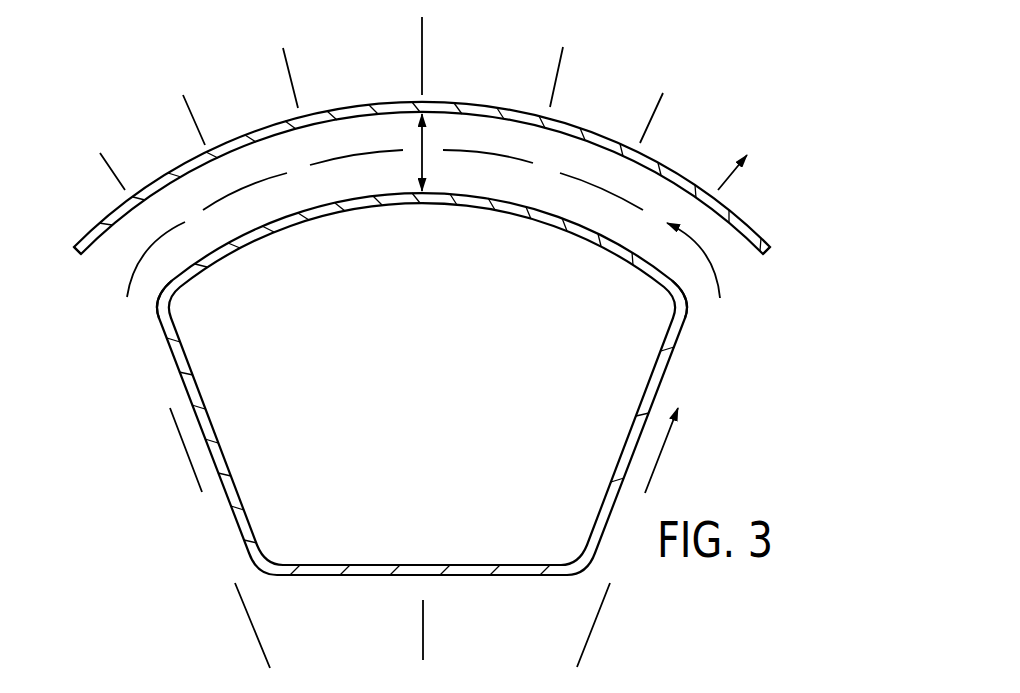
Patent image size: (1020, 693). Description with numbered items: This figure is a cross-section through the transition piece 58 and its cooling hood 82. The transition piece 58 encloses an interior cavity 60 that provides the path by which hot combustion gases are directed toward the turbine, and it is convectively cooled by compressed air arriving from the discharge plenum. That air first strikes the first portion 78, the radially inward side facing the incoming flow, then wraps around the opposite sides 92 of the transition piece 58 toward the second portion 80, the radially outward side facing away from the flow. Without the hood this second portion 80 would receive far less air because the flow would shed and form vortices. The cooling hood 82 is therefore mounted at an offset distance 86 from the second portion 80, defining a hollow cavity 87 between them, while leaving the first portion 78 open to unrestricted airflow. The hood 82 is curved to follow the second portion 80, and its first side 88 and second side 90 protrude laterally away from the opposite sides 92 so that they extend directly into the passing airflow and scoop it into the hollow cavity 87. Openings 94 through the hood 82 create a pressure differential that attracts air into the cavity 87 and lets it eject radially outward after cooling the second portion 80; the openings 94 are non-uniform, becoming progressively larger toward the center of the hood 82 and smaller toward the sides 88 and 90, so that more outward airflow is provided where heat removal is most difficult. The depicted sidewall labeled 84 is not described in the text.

The transition piece 58 is at (217, 517).
The interior cavity 60 is at (435, 419).
The first portion 78 is at (360, 575).
The second portion 80 is at (197, 263).
The cooling hood 82 is at (672, 167).
The side wall 84 is at (177, 366).
The offset distance 86 is at (427, 142).
The hollow cavity 87 is at (517, 147).
The first side 88 is at (80, 248).
The second side 90 is at (768, 249).
The opposite sides 92 is at (156, 306).
The openings 94 is at (200, 147).